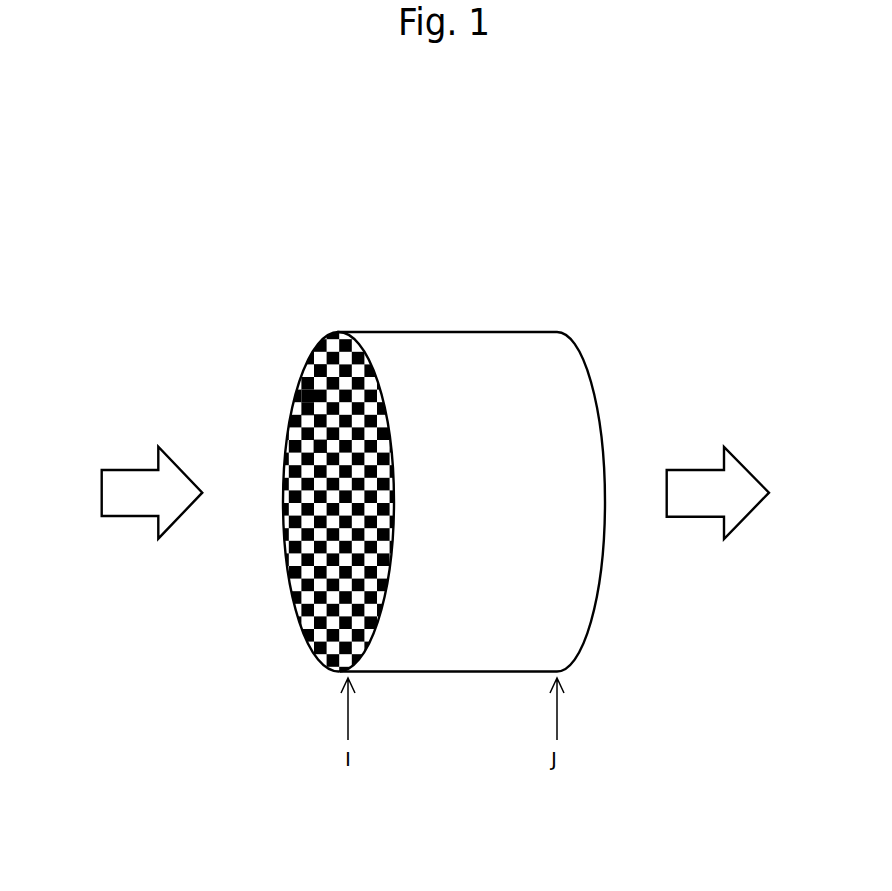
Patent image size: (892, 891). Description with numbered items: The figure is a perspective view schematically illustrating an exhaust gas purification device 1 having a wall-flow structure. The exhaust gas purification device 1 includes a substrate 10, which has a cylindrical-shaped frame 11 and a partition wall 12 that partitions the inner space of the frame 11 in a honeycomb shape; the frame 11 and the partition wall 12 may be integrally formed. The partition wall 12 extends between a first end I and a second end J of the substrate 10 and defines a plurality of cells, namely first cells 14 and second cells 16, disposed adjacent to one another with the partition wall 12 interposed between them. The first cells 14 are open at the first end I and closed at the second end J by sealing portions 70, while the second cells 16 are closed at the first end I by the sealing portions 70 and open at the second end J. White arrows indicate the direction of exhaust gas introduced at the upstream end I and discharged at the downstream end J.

The exhaust gas purification device 1 is at (430, 446).
The substrate 10 is at (588, 436).
The frame 11 is at (400, 341).
The partition wall 12 is at (326, 372).
The sealing portions 70 is at (320, 400).
The first cells 14 is at (310, 423).
The second cells 16 is at (323, 448).